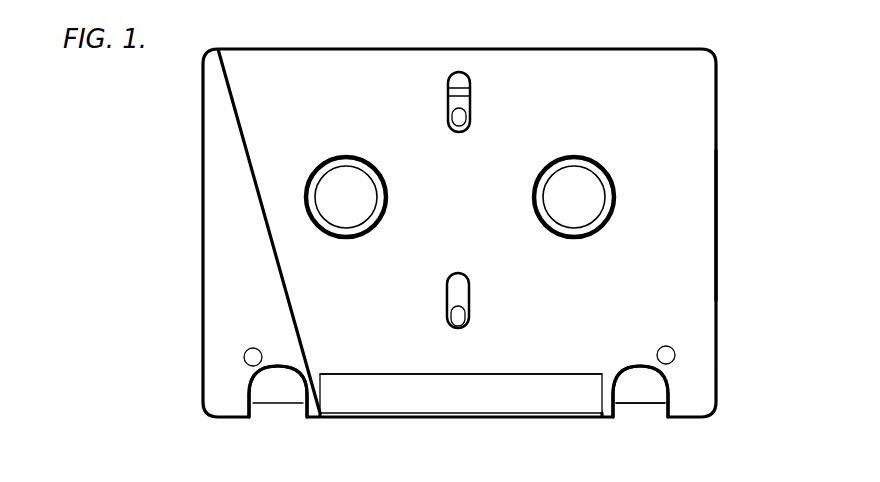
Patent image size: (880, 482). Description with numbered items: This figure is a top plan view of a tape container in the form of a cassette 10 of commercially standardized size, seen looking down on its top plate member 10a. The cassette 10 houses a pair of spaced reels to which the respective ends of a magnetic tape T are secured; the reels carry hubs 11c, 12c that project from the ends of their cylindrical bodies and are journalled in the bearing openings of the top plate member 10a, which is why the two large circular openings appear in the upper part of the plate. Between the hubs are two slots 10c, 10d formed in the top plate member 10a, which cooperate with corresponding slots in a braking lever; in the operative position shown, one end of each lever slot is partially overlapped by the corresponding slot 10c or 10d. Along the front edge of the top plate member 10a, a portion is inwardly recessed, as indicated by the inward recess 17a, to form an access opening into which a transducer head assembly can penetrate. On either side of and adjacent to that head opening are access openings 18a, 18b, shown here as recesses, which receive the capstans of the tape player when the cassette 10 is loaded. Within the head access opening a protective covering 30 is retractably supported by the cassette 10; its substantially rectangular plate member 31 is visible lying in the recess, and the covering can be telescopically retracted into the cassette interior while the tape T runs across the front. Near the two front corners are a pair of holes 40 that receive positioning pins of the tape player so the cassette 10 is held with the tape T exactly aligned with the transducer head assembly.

The cassette 10 is at (718, 160).
The top plate member 10a is at (704, 228).
The slot 10c is at (470, 84).
The slot 10d is at (469, 283).
The hub 11c is at (600, 176).
The hub 12c is at (333, 166).
The inward recess 17a is at (445, 375).
The access opening 18a is at (645, 395).
The access opening 18b is at (280, 387).
The protective covering 30 is at (399, 420).
The rectangular plate member 31 is at (500, 400).
The holes 40 is at (245, 353).
The magnetic tape T is at (625, 403).